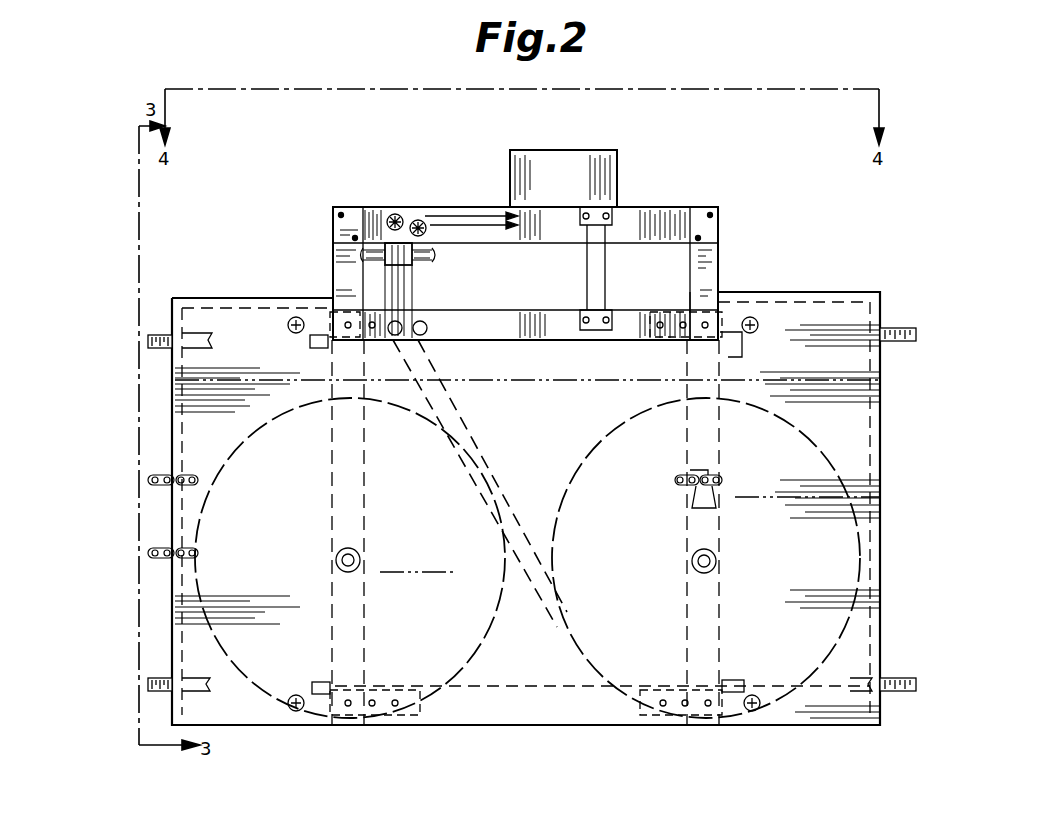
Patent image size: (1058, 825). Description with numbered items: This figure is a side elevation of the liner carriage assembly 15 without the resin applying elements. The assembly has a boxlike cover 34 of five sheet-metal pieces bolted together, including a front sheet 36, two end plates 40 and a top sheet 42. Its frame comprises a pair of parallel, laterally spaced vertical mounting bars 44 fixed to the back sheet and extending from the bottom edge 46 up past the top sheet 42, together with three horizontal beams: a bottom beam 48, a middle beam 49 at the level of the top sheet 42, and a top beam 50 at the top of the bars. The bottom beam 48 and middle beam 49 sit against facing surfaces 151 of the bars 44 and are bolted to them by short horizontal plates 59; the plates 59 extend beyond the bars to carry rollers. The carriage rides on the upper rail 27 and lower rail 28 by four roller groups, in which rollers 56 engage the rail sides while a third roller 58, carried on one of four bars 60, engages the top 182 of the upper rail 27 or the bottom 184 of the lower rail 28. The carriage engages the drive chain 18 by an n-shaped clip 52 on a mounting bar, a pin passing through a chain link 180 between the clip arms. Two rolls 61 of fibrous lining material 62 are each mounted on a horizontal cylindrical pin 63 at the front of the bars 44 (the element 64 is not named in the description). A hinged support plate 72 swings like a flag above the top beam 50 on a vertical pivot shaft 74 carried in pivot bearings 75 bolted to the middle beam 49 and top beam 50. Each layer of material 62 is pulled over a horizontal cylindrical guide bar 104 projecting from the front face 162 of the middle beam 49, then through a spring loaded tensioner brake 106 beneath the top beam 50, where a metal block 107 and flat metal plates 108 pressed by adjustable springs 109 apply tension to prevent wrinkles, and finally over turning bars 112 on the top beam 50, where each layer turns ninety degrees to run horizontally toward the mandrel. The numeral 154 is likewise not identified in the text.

The liner carriage assembly 15 is at (328, 165).
The drive chain 18 is at (148, 480).
The upper rail 27 is at (160, 348).
The lower rail 28 is at (160, 691).
The boxlike cover 34 is at (195, 290).
The front sheet 36 is at (232, 725).
The end plates 40 is at (175, 460).
The top sheet 42 is at (862, 292).
The vertical mounting bars 44 is at (335, 400).
The bottom edge 46 is at (310, 725).
The bottom beam 48 is at (448, 690).
The middle beam 49 is at (395, 340).
The top beam 50 is at (680, 207).
The n-shaped clip 52 is at (722, 497).
The roller 56 is at (312, 348).
The third roller 58 is at (286, 326).
The horizontal plates 59 is at (340, 335).
The bars 60 is at (290, 308).
The rolls 61 is at (472, 705).
The fibrous lining material 62 is at (440, 388).
The horizontal cylindrical pin 63 is at (362, 560).
The axle 64 is at (358, 550).
The hinged support plate 72 is at (598, 160).
The vertical pivot shaft 74 is at (610, 275).
The pivot bearings 75 is at (612, 215).
The horizontal cylindrical guide bars 104 is at (430, 326).
The spring loaded tensioner brake 106 is at (425, 276).
The metal block 107 is at (398, 255).
The flat metal plates 108 is at (432, 250).
The adjustable springs 109 is at (363, 262).
The turning bars 112 is at (440, 192).
The facing surfaces 151 is at (380, 645).
The drum 154 is at (330, 492).
The front face 162 is at (530, 315).
The chain link 180 is at (722, 480).
The top of the upper rail 182 is at (160, 335).
The bottom of the lower rail 184 is at (158, 678).